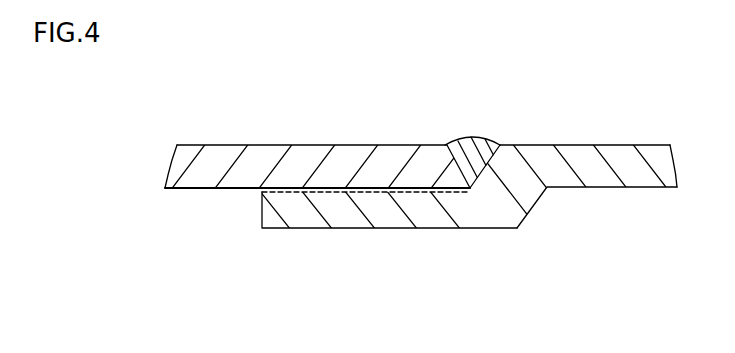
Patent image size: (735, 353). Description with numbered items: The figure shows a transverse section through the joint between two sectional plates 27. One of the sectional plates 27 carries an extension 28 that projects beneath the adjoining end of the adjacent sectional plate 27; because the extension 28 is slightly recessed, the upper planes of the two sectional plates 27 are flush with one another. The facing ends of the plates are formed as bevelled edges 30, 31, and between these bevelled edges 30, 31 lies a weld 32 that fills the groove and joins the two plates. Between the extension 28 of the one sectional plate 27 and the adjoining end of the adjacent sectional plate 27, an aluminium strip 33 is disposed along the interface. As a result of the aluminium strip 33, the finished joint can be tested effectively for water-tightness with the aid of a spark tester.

The sectional plate 27 is at (198, 178).
The extension 28 is at (400, 222).
The bevelled edge 30 is at (462, 172).
The bevelled edge 31 is at (497, 165).
The weld 32 is at (467, 138).
The aluminium strip 33 is at (287, 193).